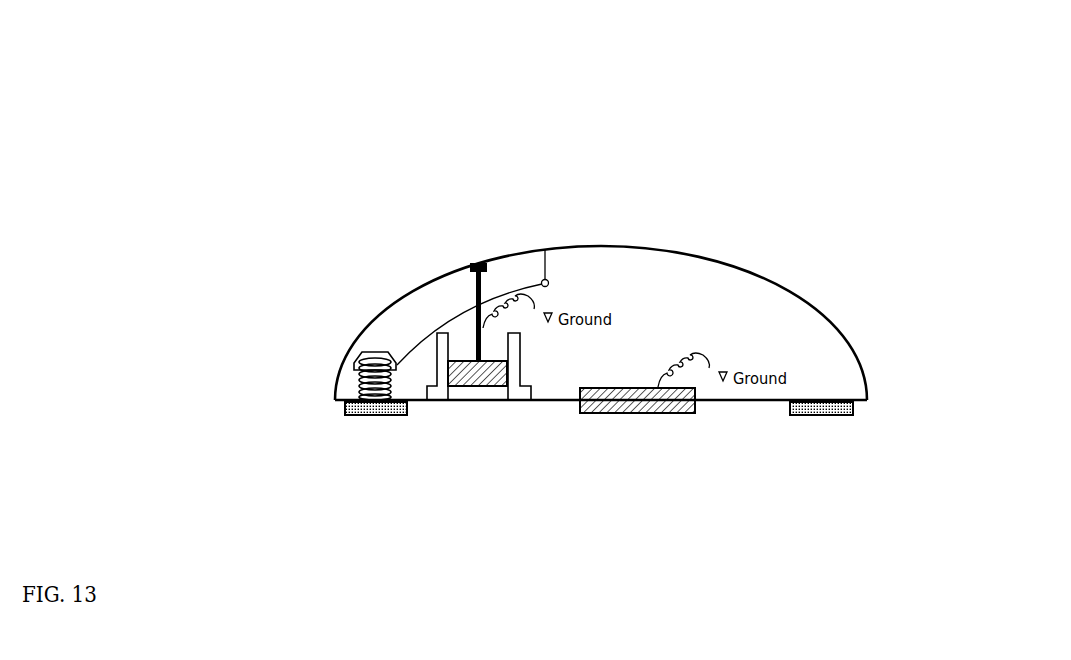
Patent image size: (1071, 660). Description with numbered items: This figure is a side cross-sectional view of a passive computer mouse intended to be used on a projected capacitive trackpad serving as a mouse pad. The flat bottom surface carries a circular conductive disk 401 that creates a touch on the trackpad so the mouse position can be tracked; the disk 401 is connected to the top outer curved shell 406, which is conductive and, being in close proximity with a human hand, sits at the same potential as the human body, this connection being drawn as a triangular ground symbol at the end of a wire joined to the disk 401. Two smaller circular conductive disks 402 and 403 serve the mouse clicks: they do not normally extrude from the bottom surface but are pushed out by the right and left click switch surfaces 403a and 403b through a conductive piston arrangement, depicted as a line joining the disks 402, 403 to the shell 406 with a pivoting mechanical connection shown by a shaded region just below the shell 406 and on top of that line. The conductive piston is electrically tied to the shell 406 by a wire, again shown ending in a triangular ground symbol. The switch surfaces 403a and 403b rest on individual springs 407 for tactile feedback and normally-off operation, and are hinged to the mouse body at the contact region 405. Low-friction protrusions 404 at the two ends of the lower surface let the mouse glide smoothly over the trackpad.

The circular conductive disk 401 is at (670, 403).
The circular conductive disk 402 is at (477, 382).
The circular conductive disk 403 is at (452, 386).
The right click switch surface 403a is at (435, 300).
The left click switch surface 403b is at (537, 287).
The low-friction surfaces 404 is at (380, 410).
The contact region 405 is at (548, 280).
The top outer curved shell 406 is at (777, 328).
The springs 407 is at (363, 375).